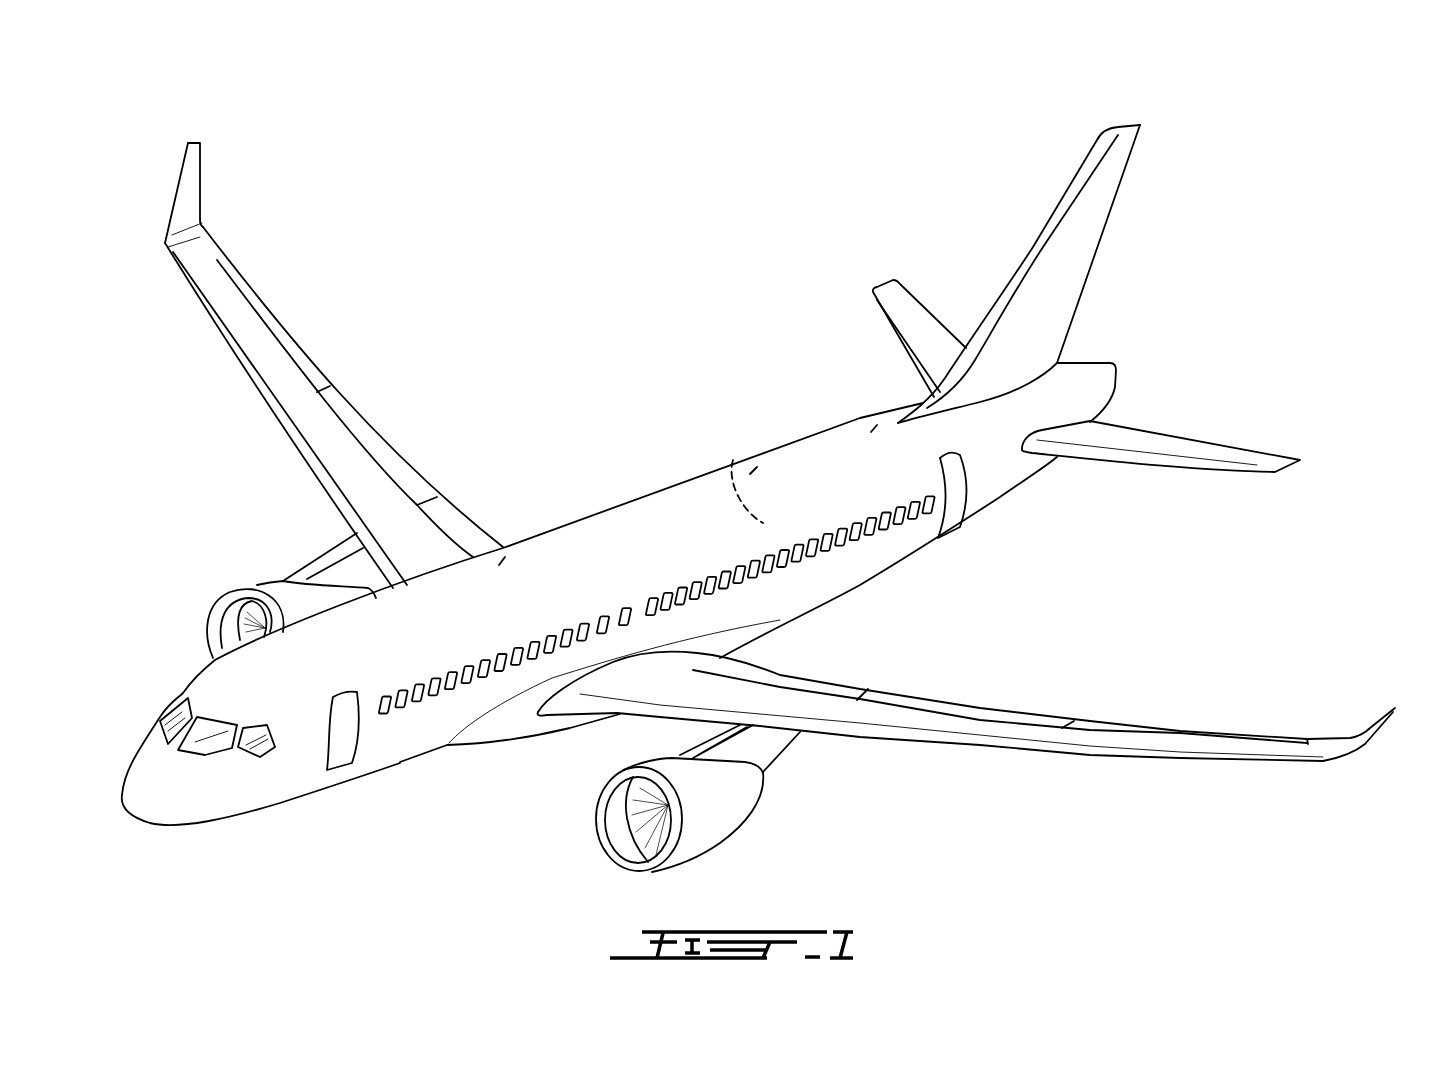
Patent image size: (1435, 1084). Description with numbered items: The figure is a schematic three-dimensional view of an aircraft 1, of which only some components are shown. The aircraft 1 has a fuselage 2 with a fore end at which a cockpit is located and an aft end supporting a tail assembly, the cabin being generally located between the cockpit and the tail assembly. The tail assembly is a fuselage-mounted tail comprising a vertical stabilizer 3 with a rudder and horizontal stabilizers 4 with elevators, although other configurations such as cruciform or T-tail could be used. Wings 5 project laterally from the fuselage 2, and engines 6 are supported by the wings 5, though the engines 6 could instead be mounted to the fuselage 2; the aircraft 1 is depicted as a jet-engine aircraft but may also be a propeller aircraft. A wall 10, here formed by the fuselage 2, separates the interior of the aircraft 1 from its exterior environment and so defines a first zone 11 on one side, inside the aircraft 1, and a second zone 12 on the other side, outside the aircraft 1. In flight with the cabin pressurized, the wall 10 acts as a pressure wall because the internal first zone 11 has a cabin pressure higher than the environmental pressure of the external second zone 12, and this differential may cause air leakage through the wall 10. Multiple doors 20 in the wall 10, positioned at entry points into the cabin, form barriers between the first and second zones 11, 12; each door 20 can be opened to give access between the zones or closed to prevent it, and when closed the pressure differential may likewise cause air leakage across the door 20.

The aircraft 1 is at (195, 118).
The fuselage 2 is at (405, 745).
The vertical stabilizer 3 is at (1080, 212).
The horizontal stabilizers 4 is at (907, 322).
The wings 5 is at (365, 473).
The engines 6 is at (276, 590).
The wall 10 is at (875, 555).
The first zone 11 is at (733, 460).
The second zone 12 is at (1152, 609).
The doors 20 is at (333, 727).